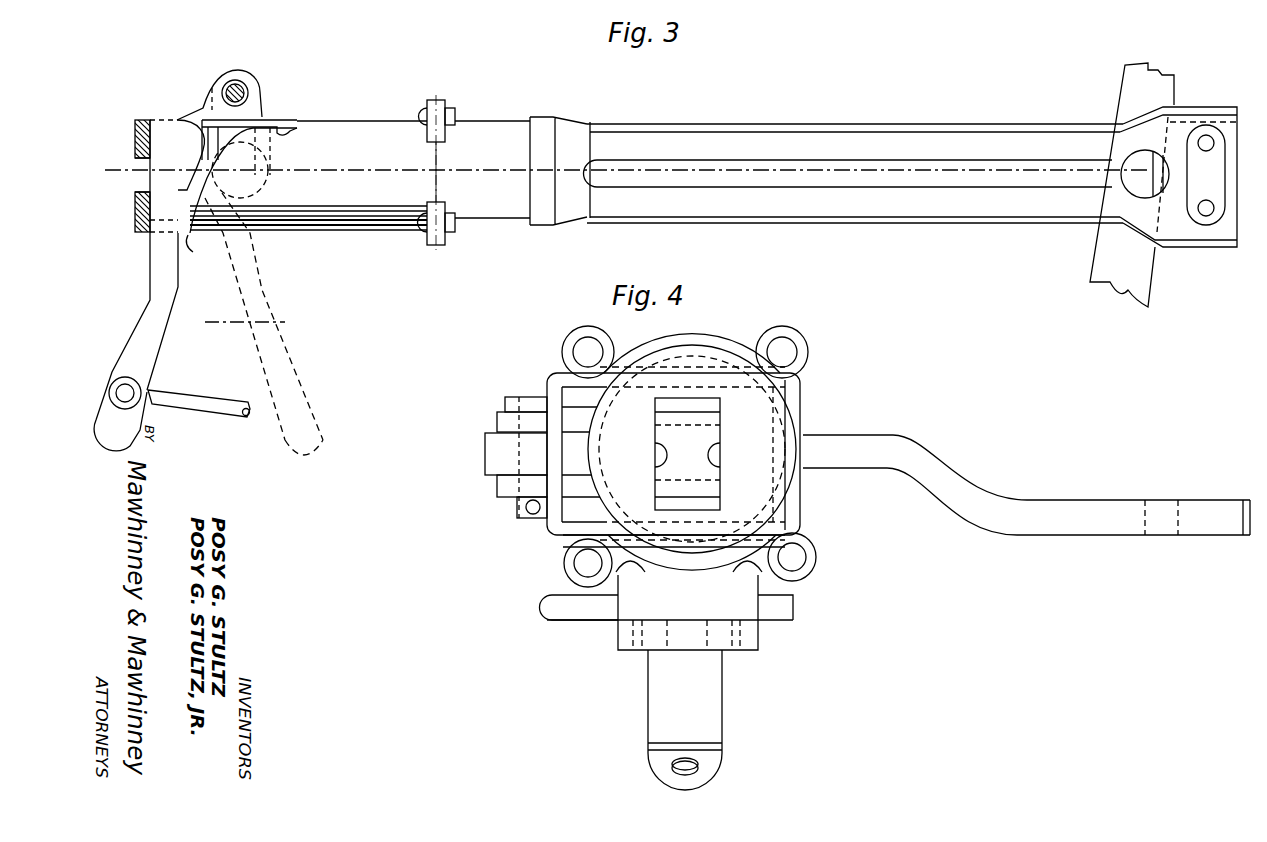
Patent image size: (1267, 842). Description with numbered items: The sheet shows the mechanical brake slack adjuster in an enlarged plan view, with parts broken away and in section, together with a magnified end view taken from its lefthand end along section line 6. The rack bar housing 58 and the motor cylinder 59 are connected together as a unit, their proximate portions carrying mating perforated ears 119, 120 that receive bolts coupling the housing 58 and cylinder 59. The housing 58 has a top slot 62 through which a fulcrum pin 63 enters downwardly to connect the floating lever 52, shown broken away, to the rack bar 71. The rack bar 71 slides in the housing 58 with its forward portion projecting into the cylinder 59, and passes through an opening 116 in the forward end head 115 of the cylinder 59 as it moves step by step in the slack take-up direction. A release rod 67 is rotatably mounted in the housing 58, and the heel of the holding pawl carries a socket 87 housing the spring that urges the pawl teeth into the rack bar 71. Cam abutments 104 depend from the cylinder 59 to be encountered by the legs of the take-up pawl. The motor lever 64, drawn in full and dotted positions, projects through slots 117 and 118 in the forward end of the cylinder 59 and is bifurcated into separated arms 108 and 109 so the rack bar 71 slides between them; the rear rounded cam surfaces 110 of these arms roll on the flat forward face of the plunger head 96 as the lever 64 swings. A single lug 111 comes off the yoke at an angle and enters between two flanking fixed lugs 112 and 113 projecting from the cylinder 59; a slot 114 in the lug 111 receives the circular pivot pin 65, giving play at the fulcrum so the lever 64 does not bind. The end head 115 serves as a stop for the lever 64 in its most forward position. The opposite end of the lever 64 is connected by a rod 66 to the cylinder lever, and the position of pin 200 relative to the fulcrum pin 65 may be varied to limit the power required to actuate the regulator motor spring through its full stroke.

In FIG. 3, the section line 6- 6 is at (105, 200).
In FIG. 3, the floating lever 52 is at (1140, 276).
In FIG. 3, the rack bar housing 58 is at (853, 137).
In FIG. 3, the motor cylinder 59 is at (338, 120).
In FIG. 4, the motor cylinder 59 is at (680, 340).
In FIG. 3, the top slot 62 is at (1157, 160).
In FIG. 3, the fulcrum pin 63 is at (1127, 178).
In FIG. 3, the motor lever 64 is at (163, 337).
In FIG. 4, the motor lever 64 is at (1045, 505).
In FIG. 3, the pivot pin 65 is at (240, 100).
In FIG. 4, the pivot pin 65 is at (520, 518).
In FIG. 3, the rod 66 is at (205, 405).
In FIG. 4, the release rod 67 is at (568, 610).
In FIG. 4, the rack bar 71 is at (660, 450).
In FIG. 4, the socket 87 is at (715, 704).
In FIG. 3, the forward head 96 is at (280, 148).
In FIG. 4, the cam abutments 104 is at (763, 595).
In FIG. 3, the arm 108 is at (183, 166).
In FIG. 4, the arm 108 is at (577, 382).
In FIG. 4, the arm 109 is at (580, 542).
In FIG. 3, the cam surfaces 110 is at (210, 176).
In FIG. 3, the lug 111 is at (188, 98).
In FIG. 4, the lug 111 is at (492, 453).
In FIG. 4, the fixed lug 112 is at (497, 417).
In FIG. 3, the fixed lug 113 is at (253, 120).
In FIG. 4, the fixed lug 113 is at (497, 495).
In FIG. 3, the slot 114 is at (223, 88).
In FIG. 3, the forward end head 115 is at (137, 225).
In FIG. 4, the forward end head 115 is at (748, 440).
In FIG. 3, the opening 116 is at (142, 182).
In FIG. 4, the opening 116 is at (728, 458).
In FIG. 3, the slot 117 is at (306, 241).
In FIG. 3, the slot 118 is at (270, 119).
In FIG. 3, the ear 119 is at (428, 100).
In FIG. 4, the ear 119 is at (790, 335).
In FIG. 3, the ear 120 is at (448, 104).
In FIG. 3, the pin 200 is at (133, 390).